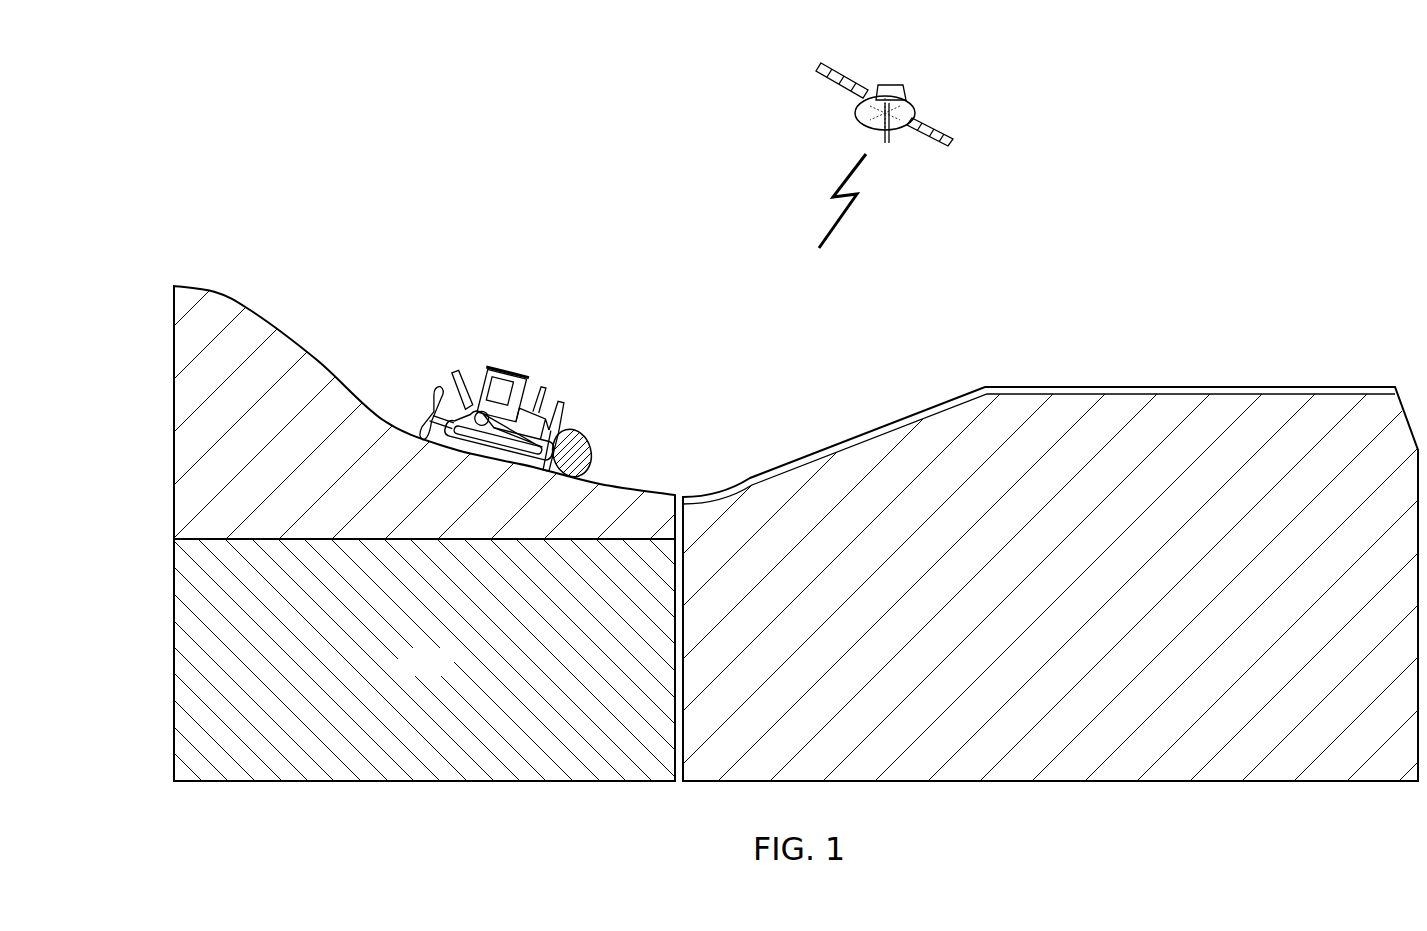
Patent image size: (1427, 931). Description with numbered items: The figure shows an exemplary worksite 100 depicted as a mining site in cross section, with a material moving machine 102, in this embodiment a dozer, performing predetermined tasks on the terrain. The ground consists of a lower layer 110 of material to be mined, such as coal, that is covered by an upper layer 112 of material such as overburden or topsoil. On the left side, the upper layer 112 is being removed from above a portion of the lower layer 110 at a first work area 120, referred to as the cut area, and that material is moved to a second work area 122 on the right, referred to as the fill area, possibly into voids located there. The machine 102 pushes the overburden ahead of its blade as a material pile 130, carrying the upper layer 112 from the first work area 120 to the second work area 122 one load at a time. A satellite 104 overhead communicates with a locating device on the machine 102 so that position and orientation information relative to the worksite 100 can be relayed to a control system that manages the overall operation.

The worksite 100 is at (1288, 224).
The machine 102 is at (514, 366).
The satellite 104 is at (908, 93).
The lower layer 110 is at (192, 647).
The upper layer 112 is at (160, 286).
The first work area 120 is at (676, 270).
The second work area 122 is at (1402, 325).
The material pile 130 is at (585, 430).